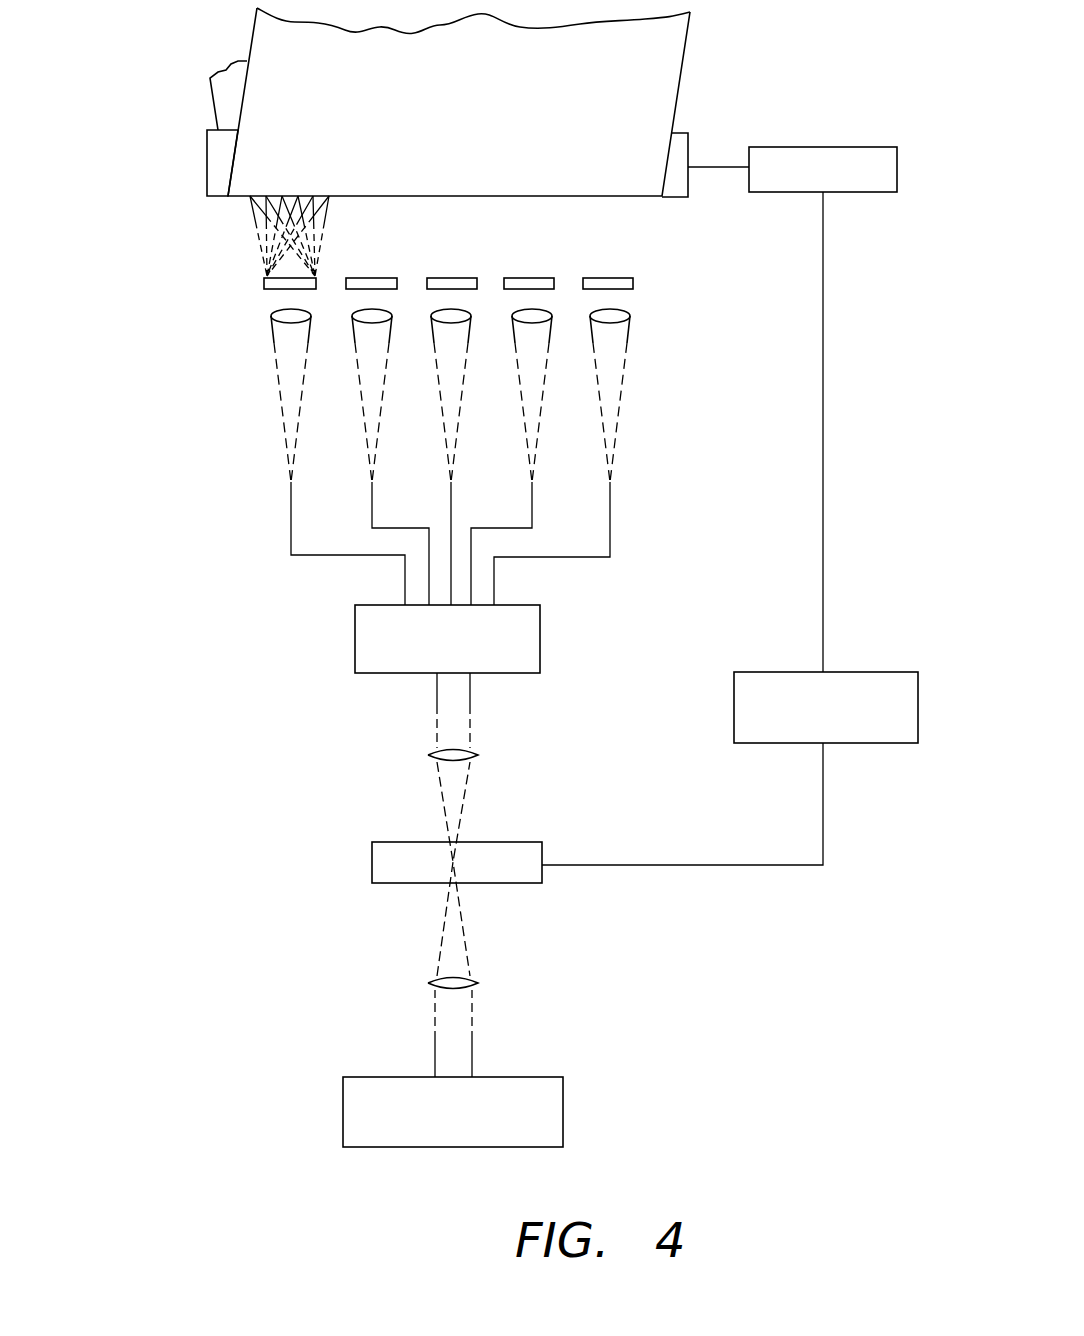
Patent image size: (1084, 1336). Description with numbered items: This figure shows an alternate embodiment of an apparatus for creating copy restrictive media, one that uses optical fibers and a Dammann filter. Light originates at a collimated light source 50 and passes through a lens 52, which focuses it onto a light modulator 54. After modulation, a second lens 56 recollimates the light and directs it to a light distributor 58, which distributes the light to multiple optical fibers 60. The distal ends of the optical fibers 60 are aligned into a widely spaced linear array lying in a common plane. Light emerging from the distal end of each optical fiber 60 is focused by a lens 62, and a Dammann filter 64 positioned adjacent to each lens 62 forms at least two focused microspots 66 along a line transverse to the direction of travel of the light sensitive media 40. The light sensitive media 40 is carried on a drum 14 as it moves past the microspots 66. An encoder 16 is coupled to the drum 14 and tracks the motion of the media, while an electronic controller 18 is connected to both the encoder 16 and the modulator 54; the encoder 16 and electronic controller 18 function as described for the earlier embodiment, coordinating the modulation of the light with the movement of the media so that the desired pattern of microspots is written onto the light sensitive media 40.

The drum 14 is at (207, 178).
The encoder 16 is at (816, 147).
The electronic controller 18 is at (845, 672).
The light sensitive media 40 is at (535, 108).
The collimated light source 50 is at (530, 1077).
The lens 52 is at (478, 983).
The modulator 54 is at (530, 842).
The lens 56 is at (478, 755).
The light distributor 58 is at (540, 612).
The optical fiber 60 is at (532, 487).
The lens 62 is at (618, 312).
The Dammann filter 64 is at (450, 278).
The focused microspots 66 is at (302, 195).